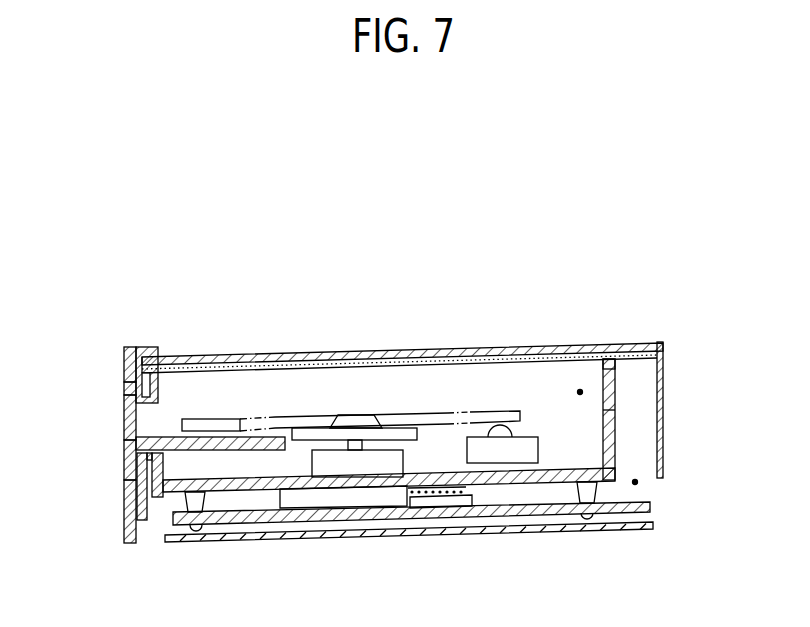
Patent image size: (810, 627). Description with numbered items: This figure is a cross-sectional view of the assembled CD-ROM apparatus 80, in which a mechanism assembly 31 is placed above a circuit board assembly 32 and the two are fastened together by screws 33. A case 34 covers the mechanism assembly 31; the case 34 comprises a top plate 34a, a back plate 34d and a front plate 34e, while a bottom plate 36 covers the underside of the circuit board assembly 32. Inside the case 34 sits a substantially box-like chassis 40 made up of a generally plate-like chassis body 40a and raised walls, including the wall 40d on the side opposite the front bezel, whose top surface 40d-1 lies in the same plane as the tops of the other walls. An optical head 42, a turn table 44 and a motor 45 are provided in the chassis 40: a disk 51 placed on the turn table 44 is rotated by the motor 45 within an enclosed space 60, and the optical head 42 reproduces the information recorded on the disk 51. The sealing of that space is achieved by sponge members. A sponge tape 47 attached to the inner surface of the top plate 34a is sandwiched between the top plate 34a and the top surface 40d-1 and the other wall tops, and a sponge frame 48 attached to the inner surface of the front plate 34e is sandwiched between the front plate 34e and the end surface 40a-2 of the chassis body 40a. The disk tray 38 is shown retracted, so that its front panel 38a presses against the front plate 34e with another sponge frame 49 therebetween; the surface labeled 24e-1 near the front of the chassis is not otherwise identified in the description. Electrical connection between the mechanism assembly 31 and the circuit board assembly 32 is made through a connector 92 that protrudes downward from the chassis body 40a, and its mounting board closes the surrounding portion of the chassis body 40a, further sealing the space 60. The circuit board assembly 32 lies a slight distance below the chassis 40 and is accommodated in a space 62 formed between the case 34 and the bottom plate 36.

The CD-ROM apparatus 80 is at (462, 226).
The case 34 is at (525, 342).
The top plate 34a is at (298, 347).
The back plate 34d is at (663, 368).
The front plate 34e is at (124, 377).
The sponge tape 47 is at (348, 362).
The sponge frame 48 is at (155, 370).
The sponge frame 49 is at (124, 387).
The disk 51 is at (268, 412).
The turn table 44 is at (387, 425).
The motor 45 is at (405, 453).
The optical head 42 is at (533, 430).
The enclosed space 60 is at (580, 392).
The wall 40d is at (615, 393).
The top surface 40d-1 is at (612, 357).
The mechanism assembly 31 is at (622, 417).
The chassis 40 is at (622, 453).
The chassis body 40a is at (280, 489).
The end surface 40a-2 is at (124, 502).
The wall part 24e-1 is at (124, 413).
The disk tray 38 is at (237, 443).
The front panel 38a is at (124, 447).
The connector 92 is at (468, 490).
The circuit board assembly 32 is at (657, 505).
The space 62 is at (635, 482).
The screws 33 is at (577, 530).
The bottom plate 36 is at (452, 537).